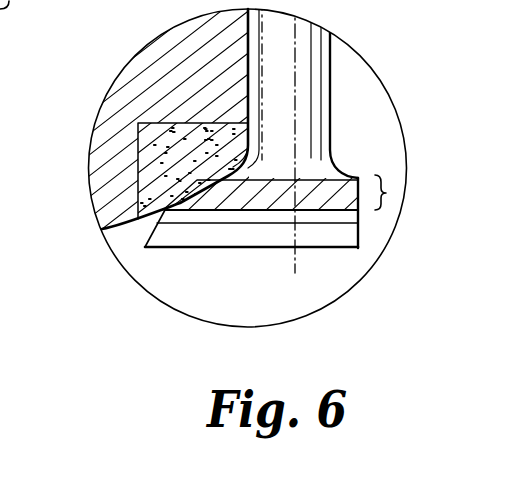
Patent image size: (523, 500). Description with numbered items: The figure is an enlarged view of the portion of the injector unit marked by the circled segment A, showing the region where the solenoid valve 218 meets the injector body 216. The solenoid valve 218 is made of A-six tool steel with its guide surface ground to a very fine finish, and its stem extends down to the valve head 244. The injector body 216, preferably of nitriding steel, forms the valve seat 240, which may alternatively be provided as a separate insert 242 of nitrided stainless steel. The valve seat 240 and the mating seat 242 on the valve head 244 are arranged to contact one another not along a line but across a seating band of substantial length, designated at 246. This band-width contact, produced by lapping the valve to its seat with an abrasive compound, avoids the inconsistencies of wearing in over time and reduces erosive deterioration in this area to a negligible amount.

The injector body 216 is at (145, 77).
The solenoid valve 218 is at (288, 100).
The valve seat 240 is at (227, 173).
The mating seat 242 is at (236, 202).
The valve head 244 is at (173, 238).
The seating band 246 is at (413, 187).
The circled segment A is at (377, 117).